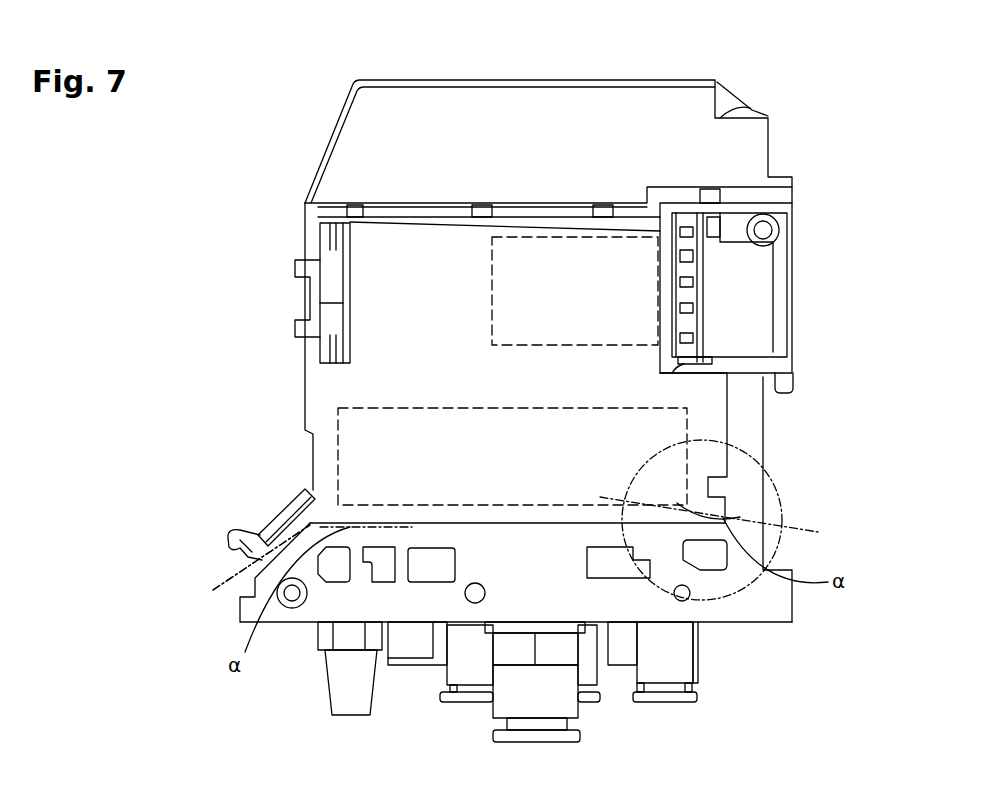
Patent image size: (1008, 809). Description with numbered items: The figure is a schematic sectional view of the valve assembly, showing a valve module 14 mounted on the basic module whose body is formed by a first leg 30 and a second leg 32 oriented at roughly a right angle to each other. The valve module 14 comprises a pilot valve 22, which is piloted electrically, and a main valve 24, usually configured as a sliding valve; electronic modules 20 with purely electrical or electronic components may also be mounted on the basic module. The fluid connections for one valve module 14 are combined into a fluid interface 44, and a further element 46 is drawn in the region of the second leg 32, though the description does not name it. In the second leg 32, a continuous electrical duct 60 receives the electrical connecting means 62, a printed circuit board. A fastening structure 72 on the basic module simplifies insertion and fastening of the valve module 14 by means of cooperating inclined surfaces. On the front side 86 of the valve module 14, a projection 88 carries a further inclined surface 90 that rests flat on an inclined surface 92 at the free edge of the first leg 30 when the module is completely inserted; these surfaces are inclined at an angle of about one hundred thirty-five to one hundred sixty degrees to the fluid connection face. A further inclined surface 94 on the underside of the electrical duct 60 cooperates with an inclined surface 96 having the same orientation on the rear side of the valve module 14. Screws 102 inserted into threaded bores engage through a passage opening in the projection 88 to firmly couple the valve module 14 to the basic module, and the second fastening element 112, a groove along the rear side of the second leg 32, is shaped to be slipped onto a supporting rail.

The electronic module 20 is at (683, 96).
The valve module 14 is at (294, 265).
The front side 86 is at (309, 372).
The pilot valve 22 is at (575, 291).
The main valve 24 is at (512, 456).
The second leg 32 is at (783, 317).
The contacts 46 is at (707, 258).
The electrical duct 60 is at (753, 285).
The electrical connecting means 62 is at (730, 216).
The inclined surface 94 is at (717, 362).
The inclined surface 96 is at (680, 372).
The second fastening element 112 is at (768, 432).
The fastening structure 72 is at (733, 488).
The first leg 30 is at (375, 602).
The fluid interface 44 is at (468, 527).
The screw 102 is at (270, 522).
The projection 88 is at (232, 533).
The inclined surface 90 is at (245, 535).
The inclined surface 92 is at (224, 583).